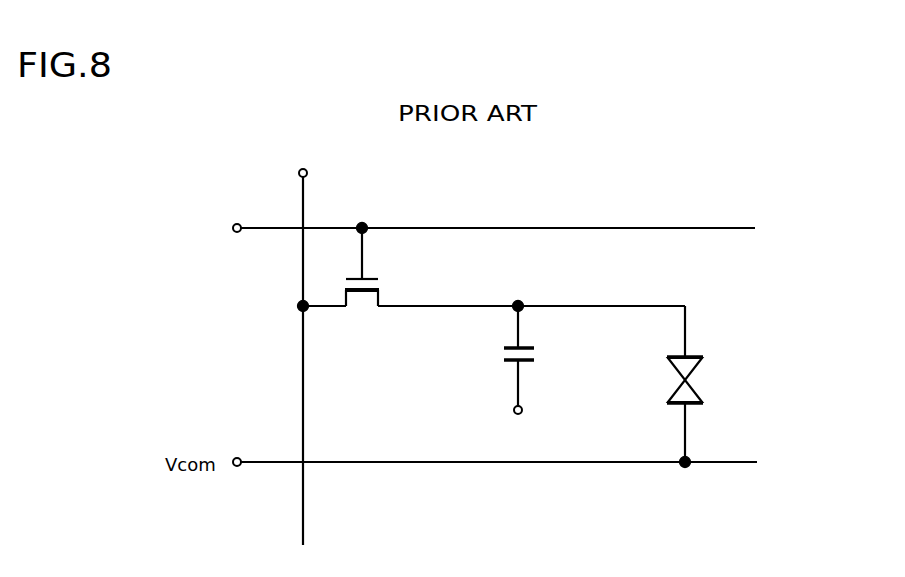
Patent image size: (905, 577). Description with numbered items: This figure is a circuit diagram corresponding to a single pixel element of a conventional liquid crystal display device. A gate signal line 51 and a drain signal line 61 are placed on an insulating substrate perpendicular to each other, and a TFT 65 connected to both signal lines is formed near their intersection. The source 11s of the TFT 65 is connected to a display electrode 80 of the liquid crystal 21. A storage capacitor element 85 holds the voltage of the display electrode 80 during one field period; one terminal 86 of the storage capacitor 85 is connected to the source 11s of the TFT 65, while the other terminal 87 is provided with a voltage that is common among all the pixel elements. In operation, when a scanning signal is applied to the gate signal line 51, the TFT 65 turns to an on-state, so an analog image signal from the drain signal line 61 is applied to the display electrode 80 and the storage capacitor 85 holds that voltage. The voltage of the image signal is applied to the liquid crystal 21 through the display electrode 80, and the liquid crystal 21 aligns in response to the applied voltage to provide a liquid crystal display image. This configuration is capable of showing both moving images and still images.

The drain signal line 61 is at (302, 203).
The gate signal line 51 is at (439, 225).
The TFT 65 is at (364, 308).
The source 11s is at (463, 304).
The display electrode 80 is at (654, 303).
The terminal 86 is at (522, 319).
The storage capacitor element 85 is at (540, 355).
The terminal 87 is at (527, 411).
The liquid crystal 21 is at (695, 382).